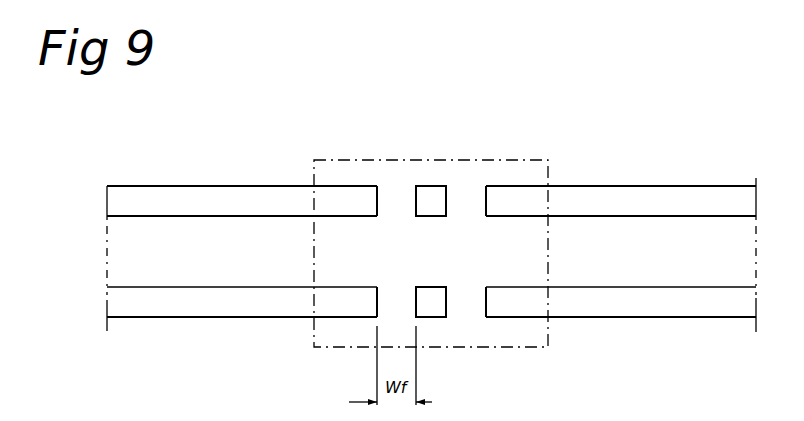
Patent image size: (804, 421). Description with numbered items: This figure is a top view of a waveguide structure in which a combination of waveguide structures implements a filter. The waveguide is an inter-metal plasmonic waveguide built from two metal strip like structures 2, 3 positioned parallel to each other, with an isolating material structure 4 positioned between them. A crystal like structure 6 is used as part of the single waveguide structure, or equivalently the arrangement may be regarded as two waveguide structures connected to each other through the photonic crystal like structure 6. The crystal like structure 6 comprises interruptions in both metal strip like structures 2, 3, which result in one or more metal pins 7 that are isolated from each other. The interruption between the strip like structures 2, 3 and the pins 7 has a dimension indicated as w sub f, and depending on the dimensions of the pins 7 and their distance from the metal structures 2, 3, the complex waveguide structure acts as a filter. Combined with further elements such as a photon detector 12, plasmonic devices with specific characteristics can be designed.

The metal strip like structure 2 is at (150, 305).
The metal strip like structure 3 is at (125, 200).
The isolating material structure 4 is at (172, 240).
The crystal like structure 6 is at (507, 168).
The metal pin 7 is at (428, 198).
The photon detector 12 is at (375, 172).